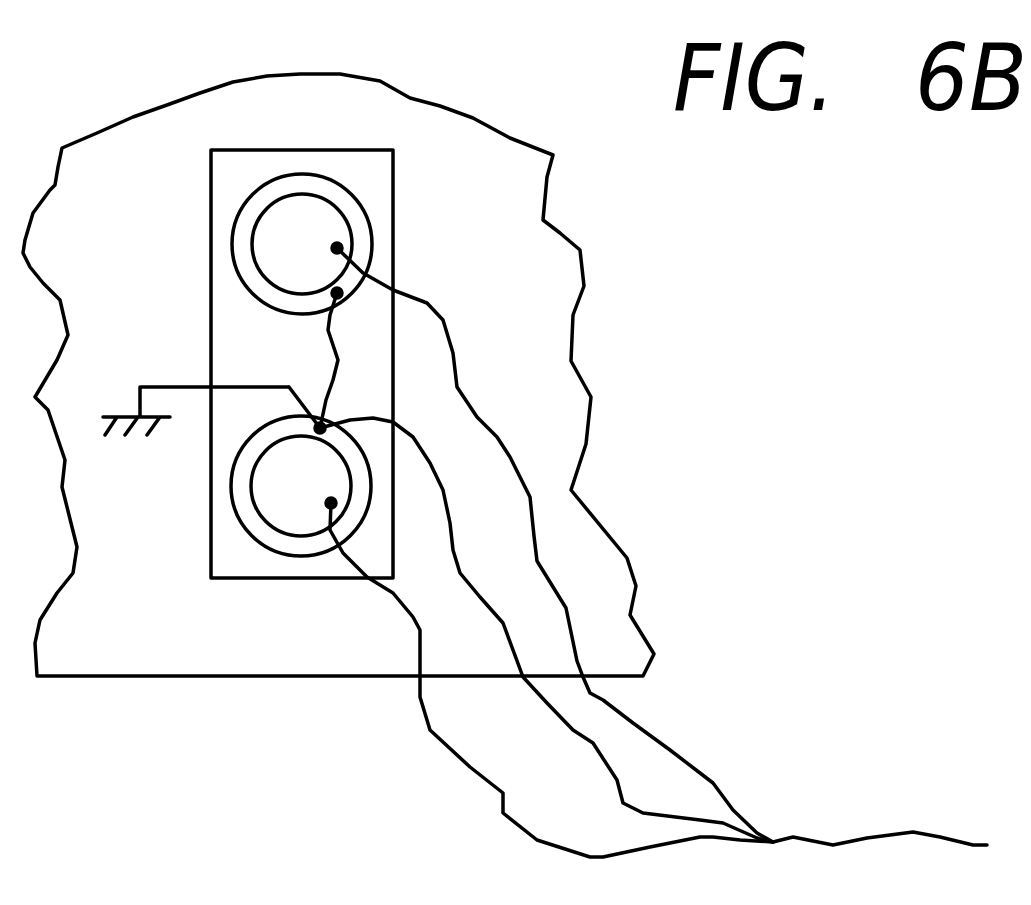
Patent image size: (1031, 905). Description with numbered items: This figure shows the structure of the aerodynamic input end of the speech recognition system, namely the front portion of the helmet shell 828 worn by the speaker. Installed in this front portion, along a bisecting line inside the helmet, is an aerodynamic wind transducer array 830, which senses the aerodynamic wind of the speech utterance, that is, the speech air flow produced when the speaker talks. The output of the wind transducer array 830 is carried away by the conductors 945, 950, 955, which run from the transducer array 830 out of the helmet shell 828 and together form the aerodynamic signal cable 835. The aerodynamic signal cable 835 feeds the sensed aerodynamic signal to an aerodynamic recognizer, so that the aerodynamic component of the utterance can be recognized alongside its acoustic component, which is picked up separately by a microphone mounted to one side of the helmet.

The helmet shell 828 is at (338, 350).
The aerodynamic wind transducer array 830 is at (248, 466).
The aerodynamic signal cable 835 is at (880, 791).
The conductor 945 is at (558, 545).
The conductor 950 is at (539, 680).
The conductor 955 is at (546, 630).